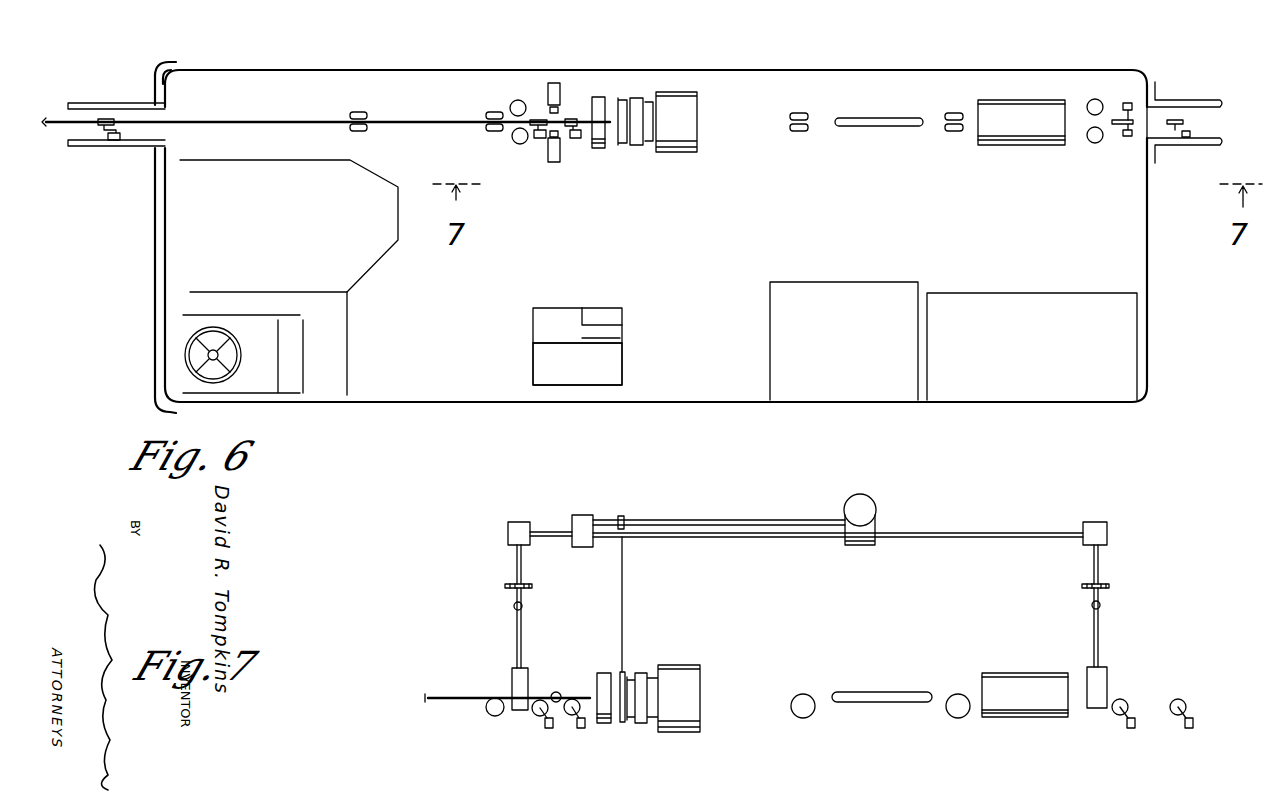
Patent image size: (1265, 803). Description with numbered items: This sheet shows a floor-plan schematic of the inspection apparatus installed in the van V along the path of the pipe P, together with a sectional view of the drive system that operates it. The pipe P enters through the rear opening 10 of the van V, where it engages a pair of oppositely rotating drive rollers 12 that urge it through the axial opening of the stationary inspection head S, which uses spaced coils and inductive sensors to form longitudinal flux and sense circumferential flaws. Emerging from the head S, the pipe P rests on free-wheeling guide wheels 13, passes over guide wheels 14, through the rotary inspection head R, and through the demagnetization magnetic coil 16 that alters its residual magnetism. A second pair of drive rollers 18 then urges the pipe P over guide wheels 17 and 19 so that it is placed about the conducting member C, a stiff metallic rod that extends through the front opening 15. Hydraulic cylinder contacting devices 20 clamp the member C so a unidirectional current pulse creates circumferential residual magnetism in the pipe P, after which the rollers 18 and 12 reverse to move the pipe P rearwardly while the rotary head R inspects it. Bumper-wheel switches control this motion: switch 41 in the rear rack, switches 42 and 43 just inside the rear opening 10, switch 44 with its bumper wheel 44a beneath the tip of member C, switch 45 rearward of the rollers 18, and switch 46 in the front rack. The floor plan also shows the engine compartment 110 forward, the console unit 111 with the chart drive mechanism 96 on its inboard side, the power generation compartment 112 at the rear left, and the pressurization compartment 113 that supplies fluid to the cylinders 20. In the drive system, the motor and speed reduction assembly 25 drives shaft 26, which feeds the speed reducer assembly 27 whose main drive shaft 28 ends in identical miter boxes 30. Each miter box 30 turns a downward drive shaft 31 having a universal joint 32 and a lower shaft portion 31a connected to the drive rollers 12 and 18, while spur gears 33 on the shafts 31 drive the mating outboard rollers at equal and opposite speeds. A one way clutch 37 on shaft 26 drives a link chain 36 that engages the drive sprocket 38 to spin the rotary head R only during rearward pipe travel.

In FIG. 6, the rear opening 10 is at (1146, 128).
In FIG. 6, the drive rollers 12 is at (1093, 98).
In FIG. 7, the drive rollers 12 is at (1108, 670).
In FIG. 6, the guide wheels 13 is at (952, 112).
In FIG. 7, the guide wheels 13 is at (950, 717).
In FIG. 6, the guide wheels 14 is at (797, 112).
In FIG. 7, the guide wheels 14 is at (798, 718).
In FIG. 6, the front opening 15 is at (168, 114).
In FIG. 6, the magnetic coil 16 is at (598, 150).
In FIG. 7, the magnetic coil 16 is at (603, 725).
In FIG. 6, the guide wheels 17 is at (485, 112).
In FIG. 7, the guide wheels 17 is at (487, 714).
In FIG. 6, the drive rollers 18 is at (516, 144).
In FIG. 7, the drive rollers 18 is at (518, 712).
In FIG. 6, the guide wheels 19 is at (352, 113).
In FIG. 6, the hydraulic cylinder contacting devices 20 is at (554, 164).
In FIG. 7, the hydraulic cylinder contacting devices 20 is at (556, 690).
In FIG. 7, the motor and speed reduction assembly 25 is at (877, 505).
In FIG. 7, the shaft 26 is at (703, 519).
In FIG. 7, the speed reducer assembly 27 is at (583, 514).
In FIG. 7, the main drive shaft 28 is at (737, 538).
In FIG. 7, the miter boxes 30 is at (520, 520).
In FIG. 7, the drive shafts 31 is at (515, 560).
In FIG. 7, the lower drive shaft portions 31a is at (515, 627).
In FIG. 7, the universal joints 32 is at (514, 606).
In FIG. 7, the spur gears 33 is at (508, 585).
In FIG. 7, the link chain 36 is at (625, 580).
In FIG. 7, the one way clutch 37 is at (623, 515).
In FIG. 7, the drive sprocket 38 is at (625, 672).
In FIG. 6, the switch 41 is at (1185, 139).
In FIG. 7, the switch 41 is at (1188, 730).
In FIG. 6, the switch 42 is at (1128, 138).
In FIG. 7, the switch 42 is at (1128, 730).
In FIG. 6, the switch 43 is at (1128, 100).
In FIG. 6, the switch 44 is at (575, 140).
In FIG. 7, the switch 44 is at (581, 730).
In FIG. 7, the bumper wheel 44a is at (572, 690).
In FIG. 6, the switch 45 is at (540, 140).
In FIG. 7, the switch 45 is at (548, 730).
In FIG. 6, the switch 46 is at (113, 141).
In FIG. 6, the chart drive mechanism 96 is at (557, 306).
In FIG. 6, the engine compartment 110 is at (292, 230).
In FIG. 6, the console unit 111 is at (606, 367).
In FIG. 6, the power generation compartment 112 is at (1047, 347).
In FIG. 6, the pressurization compartment 113 is at (856, 347).
In FIG. 6, the conducting member C is at (266, 120).
In FIG. 7, the conducting member C is at (443, 695).
In FIG. 6, the pipe P is at (860, 128).
In FIG. 7, the pipe P is at (860, 704).
In FIG. 6, the rotary inspection head R is at (677, 153).
In FIG. 7, the rotary inspection head R is at (677, 735).
In FIG. 6, the stationary inspection head S is at (1016, 99).
In FIG. 7, the stationary inspection head S is at (1020, 718).
In FIG. 6, the van V is at (690, 405).